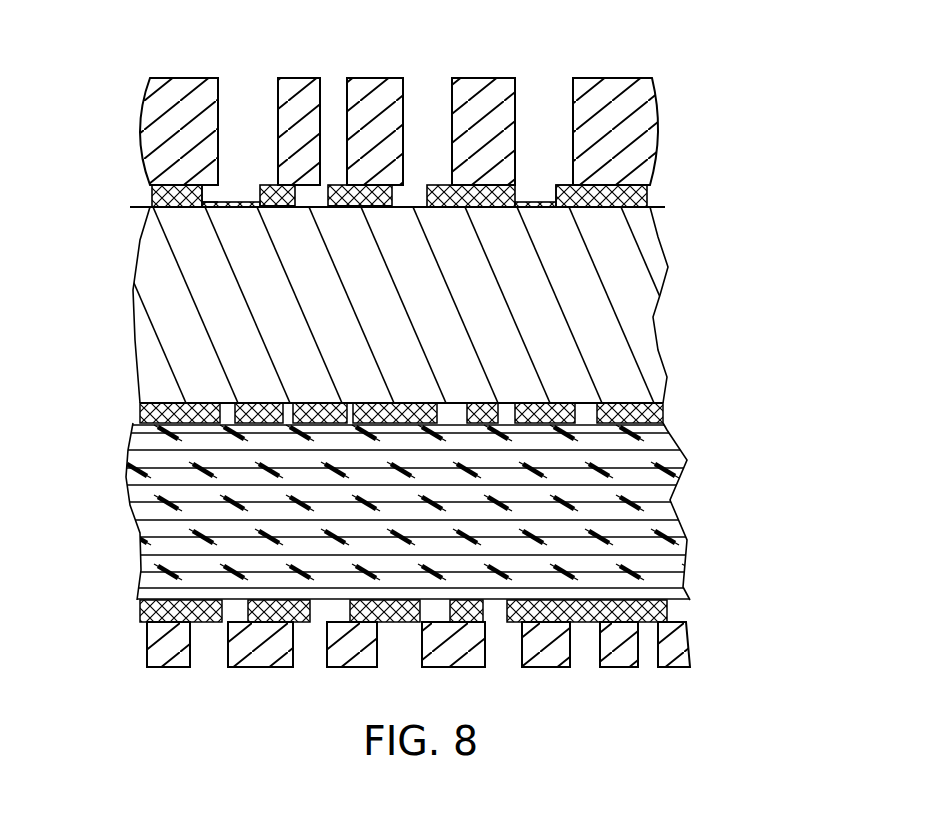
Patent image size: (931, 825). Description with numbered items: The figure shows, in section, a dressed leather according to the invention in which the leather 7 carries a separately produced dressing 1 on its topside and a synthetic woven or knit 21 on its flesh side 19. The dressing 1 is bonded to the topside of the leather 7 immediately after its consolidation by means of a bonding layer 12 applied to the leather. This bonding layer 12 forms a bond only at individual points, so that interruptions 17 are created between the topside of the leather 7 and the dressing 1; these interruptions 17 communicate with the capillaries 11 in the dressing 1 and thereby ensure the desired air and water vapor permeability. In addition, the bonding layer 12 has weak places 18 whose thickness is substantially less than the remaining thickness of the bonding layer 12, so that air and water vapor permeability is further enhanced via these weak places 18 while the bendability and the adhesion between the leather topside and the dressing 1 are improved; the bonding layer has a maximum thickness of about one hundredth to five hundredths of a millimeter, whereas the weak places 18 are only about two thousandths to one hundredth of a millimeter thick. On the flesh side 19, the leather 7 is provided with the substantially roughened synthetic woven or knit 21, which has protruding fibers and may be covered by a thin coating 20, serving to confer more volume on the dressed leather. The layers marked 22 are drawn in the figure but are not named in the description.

The dressing 1 is at (620, 173).
The leather 7 is at (556, 325).
The capillaries 11 is at (242, 147).
The bonding layer 12 is at (350, 211).
The interruptions 17 is at (367, 207).
The weak places 18 is at (225, 170).
The flesh side 19 is at (647, 390).
The thin coating 20 is at (620, 650).
The synthetic woven or knit 21 is at (605, 512).
The adhesive metal layers 22 is at (150, 410).